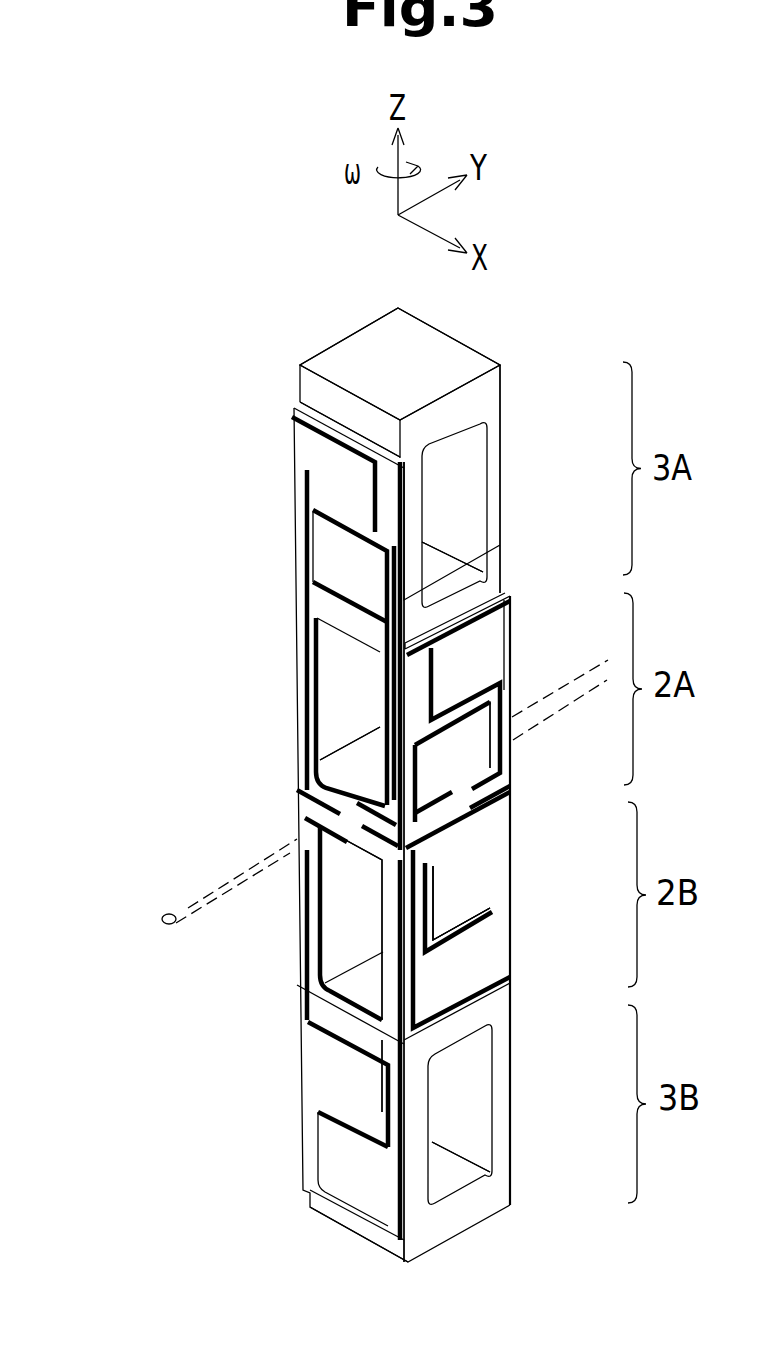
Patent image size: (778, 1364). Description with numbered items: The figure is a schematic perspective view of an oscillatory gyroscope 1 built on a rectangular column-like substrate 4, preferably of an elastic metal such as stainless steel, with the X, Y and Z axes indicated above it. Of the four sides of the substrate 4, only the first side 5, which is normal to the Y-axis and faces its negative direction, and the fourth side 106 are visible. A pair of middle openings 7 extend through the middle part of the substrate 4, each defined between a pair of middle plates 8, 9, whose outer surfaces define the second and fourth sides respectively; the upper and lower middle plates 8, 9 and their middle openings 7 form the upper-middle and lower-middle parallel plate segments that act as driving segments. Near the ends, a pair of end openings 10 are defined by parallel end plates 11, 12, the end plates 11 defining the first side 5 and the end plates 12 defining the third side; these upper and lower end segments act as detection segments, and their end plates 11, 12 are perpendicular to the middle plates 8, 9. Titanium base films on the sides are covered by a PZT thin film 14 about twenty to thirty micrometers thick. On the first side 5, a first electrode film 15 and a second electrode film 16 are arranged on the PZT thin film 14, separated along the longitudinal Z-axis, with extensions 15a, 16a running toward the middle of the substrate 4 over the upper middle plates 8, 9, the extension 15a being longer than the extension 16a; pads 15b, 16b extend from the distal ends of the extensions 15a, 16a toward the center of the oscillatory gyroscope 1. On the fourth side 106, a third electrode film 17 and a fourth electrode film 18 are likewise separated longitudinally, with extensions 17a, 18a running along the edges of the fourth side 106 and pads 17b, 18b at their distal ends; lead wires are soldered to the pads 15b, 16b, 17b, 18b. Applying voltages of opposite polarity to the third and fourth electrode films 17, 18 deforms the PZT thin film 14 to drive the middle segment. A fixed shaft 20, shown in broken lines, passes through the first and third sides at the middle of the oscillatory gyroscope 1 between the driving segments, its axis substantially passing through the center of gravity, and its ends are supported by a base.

The oscillatory gyroscope 1 is at (695, 308).
The substrate 4 is at (460, 352).
The first side 5 is at (350, 414).
The fourth side 106 is at (455, 410).
The end opening 10 is at (470, 447).
The end plate 11 is at (416, 566).
The end plate 12 is at (503, 518).
The PZT thin film 14 is at (390, 482).
The first electrode film 15 is at (308, 454).
The second electrode film 16 is at (330, 556).
The extension 15a is at (300, 605).
The extension 16a is at (385, 666).
The middle opening 7 is at (335, 643).
The middle plate 8 is at (335, 714).
The middle plate 9 is at (386, 732).
The pad 16b is at (315, 780).
The pad 15b is at (300, 808).
The third electrode film 17 is at (495, 635).
The extension 17a is at (505, 697).
The pad 17b is at (510, 780).
The fourth electrode film 18 is at (513, 736).
The extension 18a is at (433, 805).
The pad 18b is at (467, 842).
The fixed shaft 20 is at (218, 886).